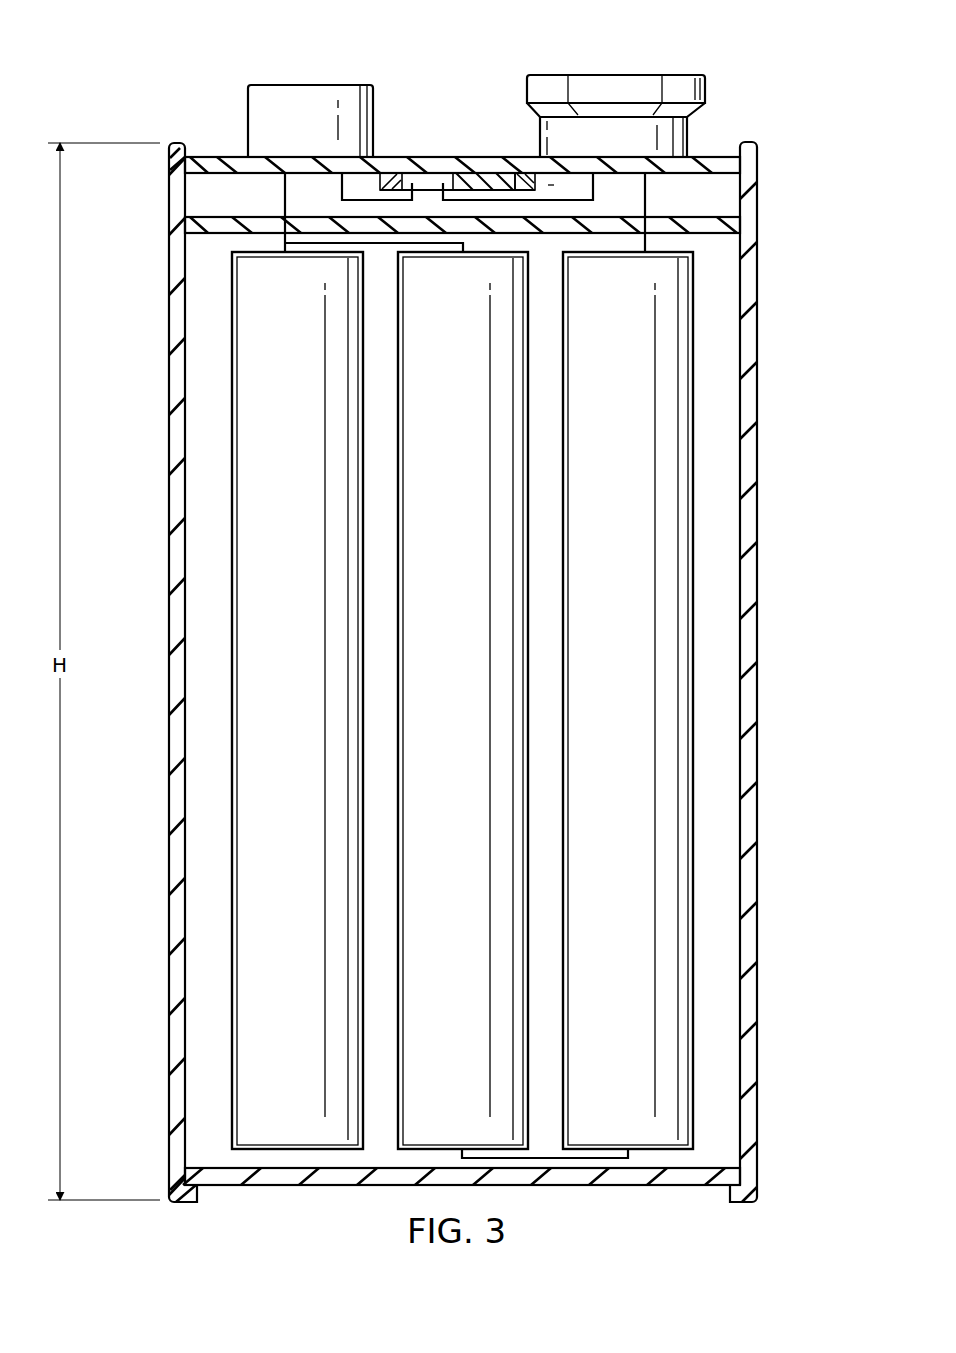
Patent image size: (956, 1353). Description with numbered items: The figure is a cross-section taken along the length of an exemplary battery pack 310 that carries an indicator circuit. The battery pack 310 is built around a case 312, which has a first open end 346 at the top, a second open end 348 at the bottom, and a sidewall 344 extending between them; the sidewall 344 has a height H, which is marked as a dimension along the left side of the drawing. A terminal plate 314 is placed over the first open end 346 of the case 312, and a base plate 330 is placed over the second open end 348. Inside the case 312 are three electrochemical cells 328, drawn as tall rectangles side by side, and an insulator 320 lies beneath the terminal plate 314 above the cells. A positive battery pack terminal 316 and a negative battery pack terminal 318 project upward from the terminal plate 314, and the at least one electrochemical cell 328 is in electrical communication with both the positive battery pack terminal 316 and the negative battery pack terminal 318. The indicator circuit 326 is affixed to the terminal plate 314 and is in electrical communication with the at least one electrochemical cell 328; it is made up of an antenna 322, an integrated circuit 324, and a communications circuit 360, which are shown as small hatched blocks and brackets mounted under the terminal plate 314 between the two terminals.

The battery pack 310 is at (830, 212).
The case 312 is at (758, 746).
The terminal plate 314 is at (235, 156).
The positive battery pack terminal 316 is at (306, 85).
The negative battery pack terminal 318 is at (620, 75).
The insulator 320 is at (205, 210).
The antenna 322 is at (392, 180).
The integrated circuit 324 is at (446, 182).
The indicator circuit 326 is at (556, 184).
The electrochemical cell 328 is at (318, 703).
The base plate 330 is at (333, 1186).
The sidewall 344 is at (150, 703).
The first open end 346 is at (171, 124).
The second open end 348 is at (226, 1204).
The communications circuit 360 is at (480, 182).